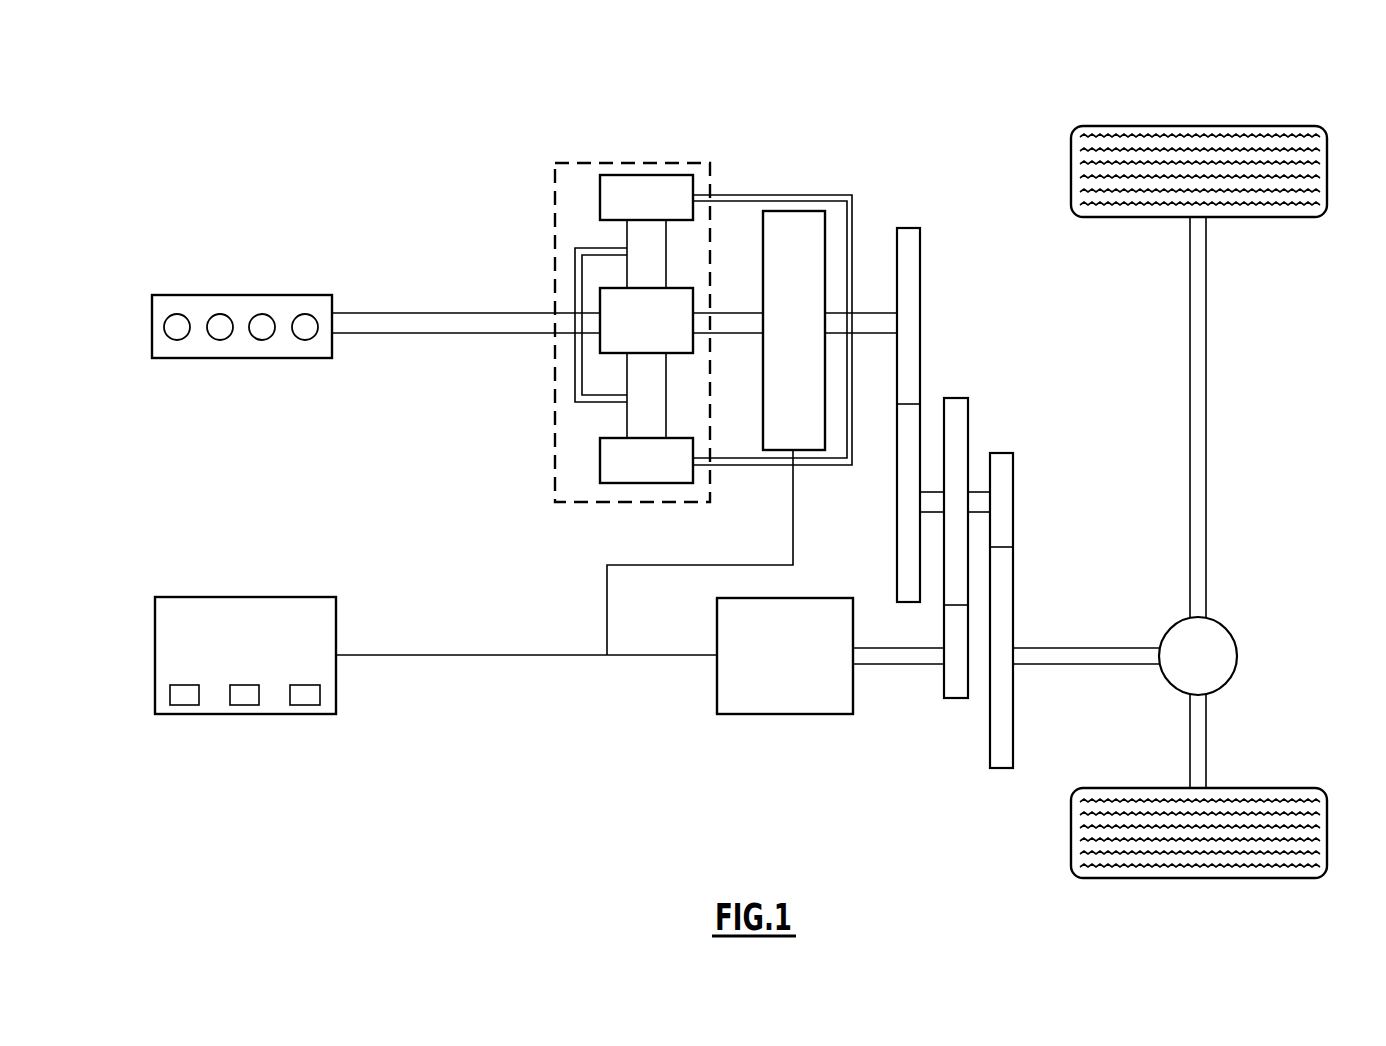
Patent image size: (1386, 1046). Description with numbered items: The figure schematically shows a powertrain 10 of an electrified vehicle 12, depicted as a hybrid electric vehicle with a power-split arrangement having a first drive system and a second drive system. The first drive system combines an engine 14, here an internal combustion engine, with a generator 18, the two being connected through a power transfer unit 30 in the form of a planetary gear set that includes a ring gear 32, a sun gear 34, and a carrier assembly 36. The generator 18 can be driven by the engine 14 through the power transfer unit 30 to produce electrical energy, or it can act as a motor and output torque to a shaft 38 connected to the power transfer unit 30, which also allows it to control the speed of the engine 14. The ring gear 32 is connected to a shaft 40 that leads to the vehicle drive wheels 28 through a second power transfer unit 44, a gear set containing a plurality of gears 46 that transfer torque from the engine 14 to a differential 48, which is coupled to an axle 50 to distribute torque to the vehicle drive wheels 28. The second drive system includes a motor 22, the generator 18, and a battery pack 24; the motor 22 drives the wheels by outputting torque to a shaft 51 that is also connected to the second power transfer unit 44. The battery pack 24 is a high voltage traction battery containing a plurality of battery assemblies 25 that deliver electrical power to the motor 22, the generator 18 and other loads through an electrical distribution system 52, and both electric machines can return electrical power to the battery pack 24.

The powertrain 10 is at (390, 184).
The electrified vehicle 12 is at (823, 113).
The engine 14 is at (170, 295).
The generator 18 is at (772, 211).
The motor 22 is at (855, 698).
The battery pack 24 is at (170, 597).
The battery assemblies 25 is at (199, 694).
The vehicle drive wheels 28 is at (1327, 830).
The power transfer unit 30 is at (620, 503).
The ring gear 32 is at (600, 193).
The sun gear 34 is at (600, 300).
The carrier assembly 36 is at (575, 388).
The shaft 38 is at (729, 312).
The shaft 40 is at (873, 310).
The second power transfer unit 44 is at (997, 352).
The gears 46 is at (921, 365).
The differential 48 is at (1231, 677).
The axle 50 is at (1207, 405).
The shaft 51 is at (910, 665).
The electrical distribution system 52 is at (489, 676).